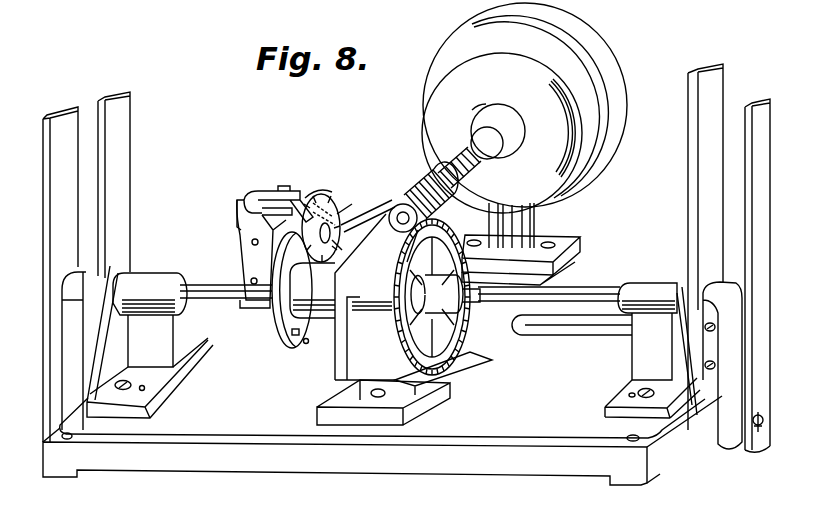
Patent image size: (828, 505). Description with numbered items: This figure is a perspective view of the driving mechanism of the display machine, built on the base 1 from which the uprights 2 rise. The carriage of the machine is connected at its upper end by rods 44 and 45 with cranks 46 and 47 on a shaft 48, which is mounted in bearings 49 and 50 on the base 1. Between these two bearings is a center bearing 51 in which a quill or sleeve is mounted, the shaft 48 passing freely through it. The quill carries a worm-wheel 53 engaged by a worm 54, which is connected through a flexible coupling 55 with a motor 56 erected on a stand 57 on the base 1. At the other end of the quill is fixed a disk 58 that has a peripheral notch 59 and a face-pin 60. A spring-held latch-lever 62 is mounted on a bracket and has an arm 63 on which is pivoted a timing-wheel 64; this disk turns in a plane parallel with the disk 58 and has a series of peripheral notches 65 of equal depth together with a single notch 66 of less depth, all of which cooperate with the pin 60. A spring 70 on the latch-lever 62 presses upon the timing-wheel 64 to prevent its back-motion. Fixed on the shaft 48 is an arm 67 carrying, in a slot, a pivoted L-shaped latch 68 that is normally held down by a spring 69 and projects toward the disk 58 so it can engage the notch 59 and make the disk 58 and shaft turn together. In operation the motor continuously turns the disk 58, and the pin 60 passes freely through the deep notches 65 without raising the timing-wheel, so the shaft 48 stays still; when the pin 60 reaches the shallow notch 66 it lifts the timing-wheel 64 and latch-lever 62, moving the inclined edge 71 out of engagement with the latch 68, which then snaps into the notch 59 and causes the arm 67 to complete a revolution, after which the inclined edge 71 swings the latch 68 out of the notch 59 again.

The base 1 is at (382, 427).
The uprights 2 is at (120, 160).
The rod 44 is at (58, 182).
The rod 45 is at (764, 168).
The crank 46 is at (76, 340).
The crank 47 is at (720, 432).
The shaft 48 is at (211, 284).
The bearing 49 is at (150, 342).
The bearing 50 is at (652, 350).
The bearing 51 is at (335, 400).
The worm-wheel 53 is at (400, 351).
The worm 54 is at (414, 196).
The flexible coupling 55 is at (432, 163).
The motor 56 is at (524, 108).
The stand 57 is at (536, 224).
The disk 58 is at (282, 322).
The peripheral notch 59 is at (308, 346).
The face-pin 60 is at (296, 342).
The latch-lever 62 is at (285, 197).
The arm 63 is at (307, 194).
The timing-wheel 64 is at (340, 212).
The peripheral notches 65 is at (342, 238).
The notch 66 is at (340, 238).
The arm 67 is at (250, 253).
The L-shaped latch 68 is at (250, 196).
The spring 69 is at (237, 197).
The spring 70 is at (318, 192).
The inclined edge 71 is at (268, 196).